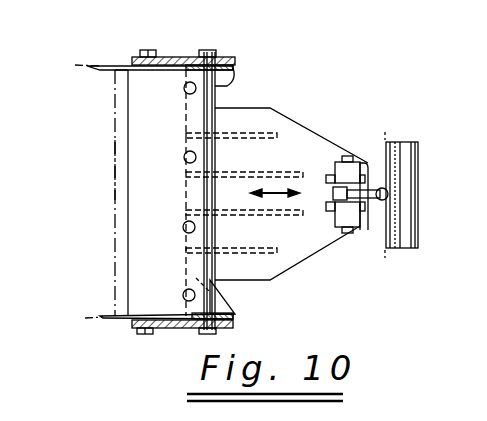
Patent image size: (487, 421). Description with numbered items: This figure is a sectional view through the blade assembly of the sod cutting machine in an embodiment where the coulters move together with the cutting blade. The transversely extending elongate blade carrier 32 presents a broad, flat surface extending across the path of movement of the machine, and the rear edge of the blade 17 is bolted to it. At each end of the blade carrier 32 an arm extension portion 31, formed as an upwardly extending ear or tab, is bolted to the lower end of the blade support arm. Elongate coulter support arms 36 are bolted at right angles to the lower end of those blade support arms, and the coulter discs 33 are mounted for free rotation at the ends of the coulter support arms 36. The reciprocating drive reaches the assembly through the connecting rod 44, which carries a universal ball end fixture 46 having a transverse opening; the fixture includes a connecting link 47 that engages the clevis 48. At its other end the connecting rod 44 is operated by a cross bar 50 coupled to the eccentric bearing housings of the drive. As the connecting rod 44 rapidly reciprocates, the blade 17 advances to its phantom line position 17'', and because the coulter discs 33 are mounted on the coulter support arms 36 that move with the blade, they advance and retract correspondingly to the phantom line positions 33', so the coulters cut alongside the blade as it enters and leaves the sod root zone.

The blade 17 is at (155, 193).
The phantom line position of blade 17'' is at (86, 170).
The arm extension portion 31 is at (217, 92).
The blade carrier 32 is at (298, 143).
The coulter discs 33 is at (155, 192).
The phantom line positions of coulter discs 33' is at (72, 199).
The coulter support arms 36 is at (232, 58).
The connecting rod 44 is at (377, 203).
The universal ball end fixture 46 is at (352, 170).
The connecting link 47 is at (347, 232).
The clevis 48 is at (345, 218).
The cross bar 50 is at (407, 228).